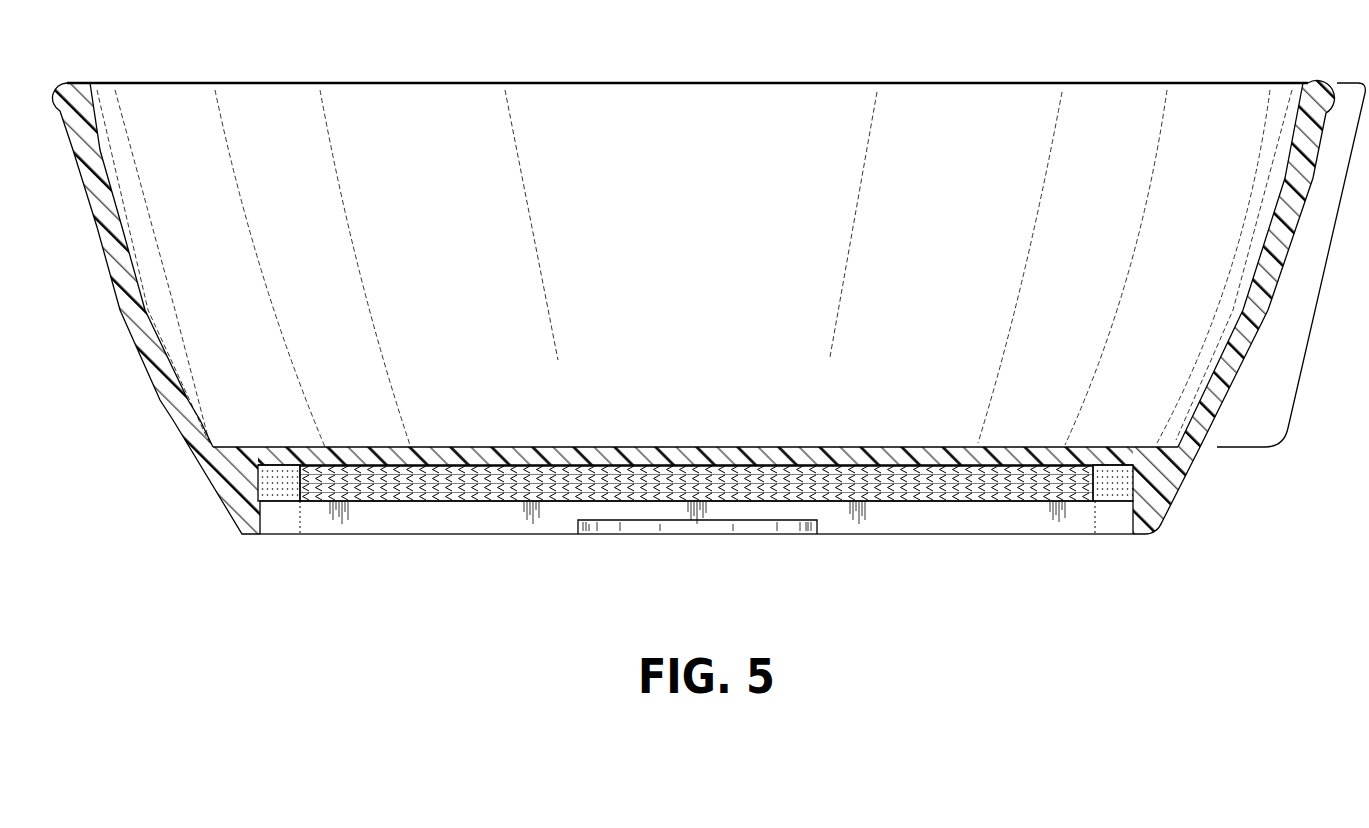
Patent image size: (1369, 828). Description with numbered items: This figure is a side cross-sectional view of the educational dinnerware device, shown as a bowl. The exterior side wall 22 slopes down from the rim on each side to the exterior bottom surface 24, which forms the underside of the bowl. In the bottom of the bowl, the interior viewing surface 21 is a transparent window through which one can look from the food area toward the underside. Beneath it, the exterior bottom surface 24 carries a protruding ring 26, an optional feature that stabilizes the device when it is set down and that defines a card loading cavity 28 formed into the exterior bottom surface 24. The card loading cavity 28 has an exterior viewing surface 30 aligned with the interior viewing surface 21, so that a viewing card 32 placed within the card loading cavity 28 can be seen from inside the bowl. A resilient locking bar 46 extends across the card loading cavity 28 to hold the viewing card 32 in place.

The interior viewing surface 21 is at (463, 447).
The exterior side wall 22 is at (1300, 372).
The exterior bottom surface 24 is at (233, 534).
The protruding ring 26 is at (1142, 534).
The card loading cavity 28 is at (250, 477).
The exterior viewing surface 30 is at (355, 462).
The viewing card 32 is at (687, 467).
The resilient locking bar 46 is at (463, 510).